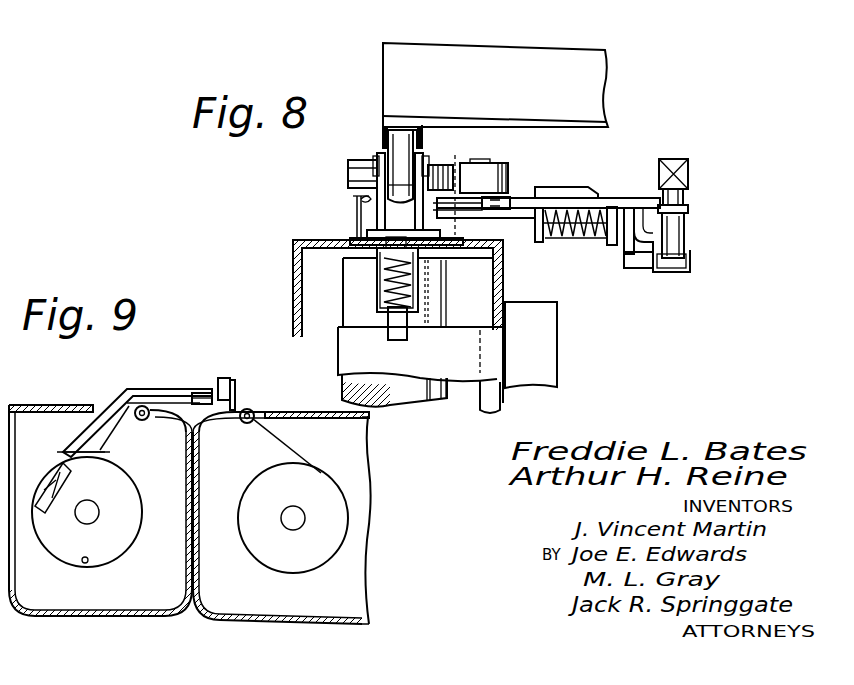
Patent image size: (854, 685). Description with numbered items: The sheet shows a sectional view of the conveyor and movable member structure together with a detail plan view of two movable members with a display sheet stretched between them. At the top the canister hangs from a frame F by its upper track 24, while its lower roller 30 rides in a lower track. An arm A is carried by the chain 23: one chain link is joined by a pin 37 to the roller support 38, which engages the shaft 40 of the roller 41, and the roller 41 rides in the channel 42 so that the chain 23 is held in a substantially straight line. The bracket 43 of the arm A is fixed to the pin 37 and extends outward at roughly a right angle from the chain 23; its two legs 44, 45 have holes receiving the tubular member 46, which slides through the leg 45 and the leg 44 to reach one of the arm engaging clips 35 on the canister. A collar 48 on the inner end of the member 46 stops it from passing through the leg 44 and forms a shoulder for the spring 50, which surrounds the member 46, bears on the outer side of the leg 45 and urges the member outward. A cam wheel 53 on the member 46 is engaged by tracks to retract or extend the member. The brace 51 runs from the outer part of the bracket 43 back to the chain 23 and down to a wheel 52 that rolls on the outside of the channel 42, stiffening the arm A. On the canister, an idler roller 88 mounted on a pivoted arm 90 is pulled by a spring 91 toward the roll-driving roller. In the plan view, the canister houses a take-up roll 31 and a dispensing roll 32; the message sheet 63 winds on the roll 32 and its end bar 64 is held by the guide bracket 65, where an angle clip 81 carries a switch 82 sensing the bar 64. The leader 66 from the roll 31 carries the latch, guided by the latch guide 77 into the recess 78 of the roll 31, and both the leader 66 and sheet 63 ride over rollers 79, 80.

In FIG. 8, the frame F is at (481, 50).
In FIG. 8, the upper track 24 is at (386, 128).
In FIG. 8, the lower roller 30 is at (393, 146).
In FIG. 8, the arm 90 is at (352, 232).
In FIG. 8, the spring 91 is at (347, 198).
In FIG. 8, the idler roller 88 is at (490, 197).
In FIG. 8, the cam wheel 53 is at (525, 210).
In FIG. 8, the member 46 is at (540, 198).
In FIG. 8, the leg 44 is at (539, 244).
In FIG. 8, the collar 48 is at (549, 240).
In FIG. 8, the leg 45 is at (609, 246).
In FIG. 8, the spring 50 is at (592, 240).
In FIG. 8, the bracket 43 is at (633, 205).
In FIG. 8, the brace 51 is at (637, 207).
In FIG. 8, the wheel 52 is at (641, 268).
In FIG. 8, the arm A is at (672, 157).
In FIG. 8, the chain 23 is at (690, 170).
In FIG. 8, the pin 37 is at (687, 200).
In FIG. 8, the roller support 38 is at (690, 215).
In FIG. 8, the roller 41 is at (686, 240).
In FIG. 8, the shaft 40 is at (692, 258).
In FIG. 8, the channel 42 is at (684, 270).
In FIG. 8, the arm engaging clip 35 is at (449, 250).
In FIG. 9, the latch guide 77 is at (130, 390).
In FIG. 9, the leader 66 is at (98, 434).
In FIG. 9, the bracket 65 is at (190, 389).
In FIG. 9, the bar 64 is at (201, 394).
In FIG. 9, the switch 82 is at (226, 376).
In FIG. 9, the angle clip 81 is at (236, 386).
In FIG. 9, the roller 80 is at (143, 421).
In FIG. 9, the roller 79 is at (248, 424).
In FIG. 9, the message sheet 63 is at (306, 455).
In FIG. 9, the take-up roll 31 is at (136, 476).
In FIG. 9, the recess 78 is at (43, 512).
In FIG. 9, the dispensing roll 32 is at (264, 566).